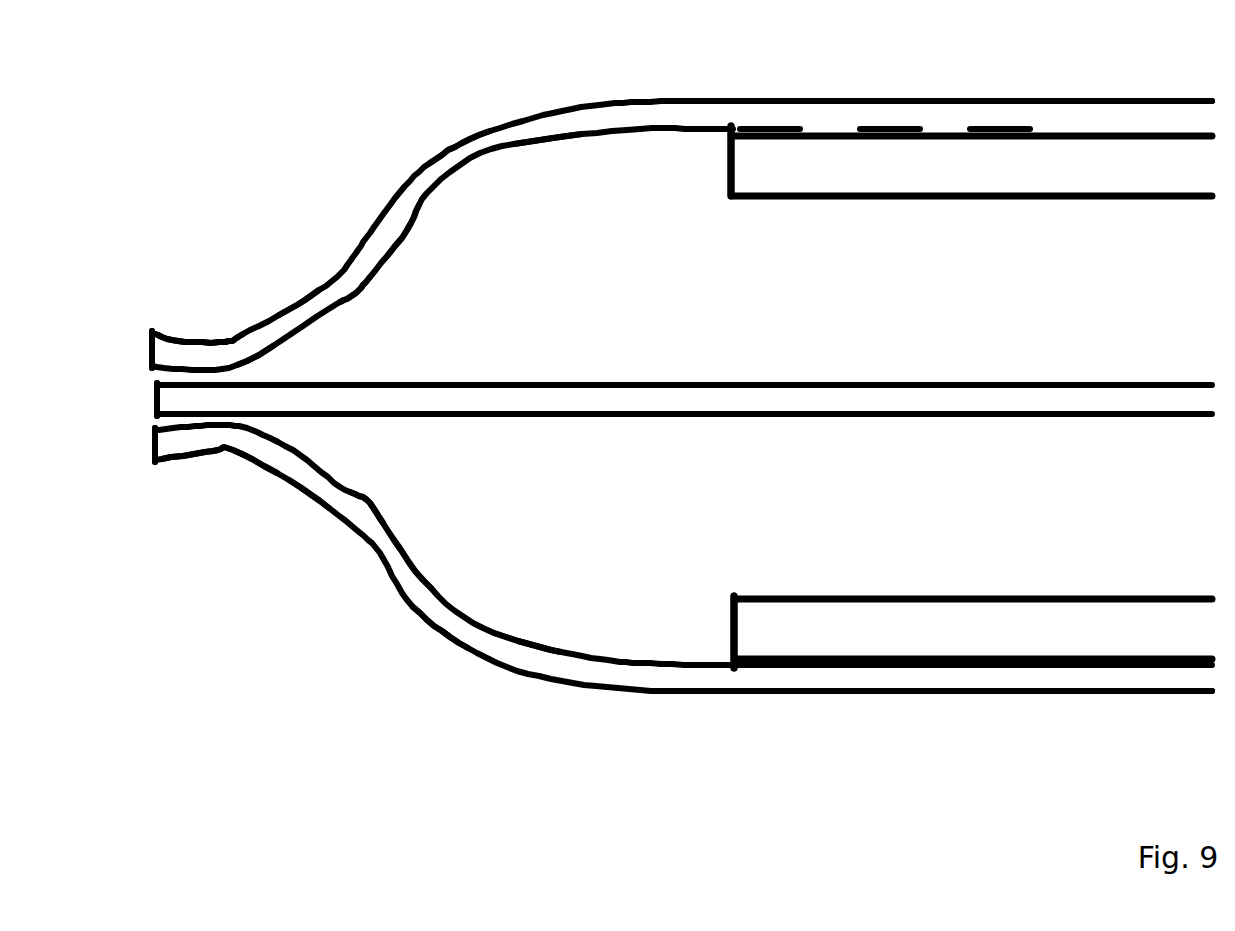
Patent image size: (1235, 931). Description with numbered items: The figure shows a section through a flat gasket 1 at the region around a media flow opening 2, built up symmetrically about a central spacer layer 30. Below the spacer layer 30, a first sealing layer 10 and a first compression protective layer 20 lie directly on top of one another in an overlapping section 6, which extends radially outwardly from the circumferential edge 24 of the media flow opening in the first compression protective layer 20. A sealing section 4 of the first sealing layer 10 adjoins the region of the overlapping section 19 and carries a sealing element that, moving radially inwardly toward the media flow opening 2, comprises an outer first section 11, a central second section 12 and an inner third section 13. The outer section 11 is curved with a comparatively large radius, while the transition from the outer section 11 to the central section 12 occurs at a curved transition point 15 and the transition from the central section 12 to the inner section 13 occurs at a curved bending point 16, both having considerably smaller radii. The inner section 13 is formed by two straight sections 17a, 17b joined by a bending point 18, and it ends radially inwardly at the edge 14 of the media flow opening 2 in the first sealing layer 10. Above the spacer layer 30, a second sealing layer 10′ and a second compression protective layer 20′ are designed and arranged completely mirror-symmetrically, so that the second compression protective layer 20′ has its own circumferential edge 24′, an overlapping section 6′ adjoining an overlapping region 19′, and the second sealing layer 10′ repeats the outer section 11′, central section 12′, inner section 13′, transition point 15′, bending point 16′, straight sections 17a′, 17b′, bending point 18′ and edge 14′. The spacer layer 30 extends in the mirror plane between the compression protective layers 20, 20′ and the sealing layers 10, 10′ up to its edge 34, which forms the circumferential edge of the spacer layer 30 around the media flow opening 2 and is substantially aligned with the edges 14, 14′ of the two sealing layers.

The flat gasket 1 is at (1078, 63).
The media flow opening 2 is at (115, 418).
The sealing section 4 is at (152, 722).
The overlapping section 6 is at (845, 672).
The first sealing layer 10 is at (925, 677).
The outer first section 11 is at (527, 657).
The central second section 12 is at (412, 583).
The inner third section 13 is at (307, 482).
The edge 14 is at (156, 438).
The curved transition point 15 is at (450, 625).
The curved bending point 16 is at (365, 508).
The straight section 17a is at (267, 457).
The straight section 17b is at (188, 437).
The bending point 18 is at (222, 442).
The overlapping section region 19 is at (1047, 678).
The first compression protective layer 20 is at (943, 640).
The circumferential edge 24 is at (730, 630).
The spacer layer 30 is at (945, 398).
The edge 34 is at (155, 398).
The overlapping section 6′ is at (762, 120).
The second sealing layer 10′ is at (883, 120).
The outer first section 11′ is at (543, 138).
The central second section 12′ is at (403, 217).
The inner third section 13′ is at (302, 318).
The edge 14′ is at (153, 348).
The curved transition point 15′ is at (455, 163).
The curved bending point 16′ is at (357, 280).
The straight section 17a′ is at (262, 348).
The straight section 17b′ is at (175, 335).
The bending point 18′ is at (225, 348).
The overlapping section region 19′ is at (993, 117).
The second compression protective layer 20′ is at (913, 175).
The circumferential edge 24′ is at (728, 168).